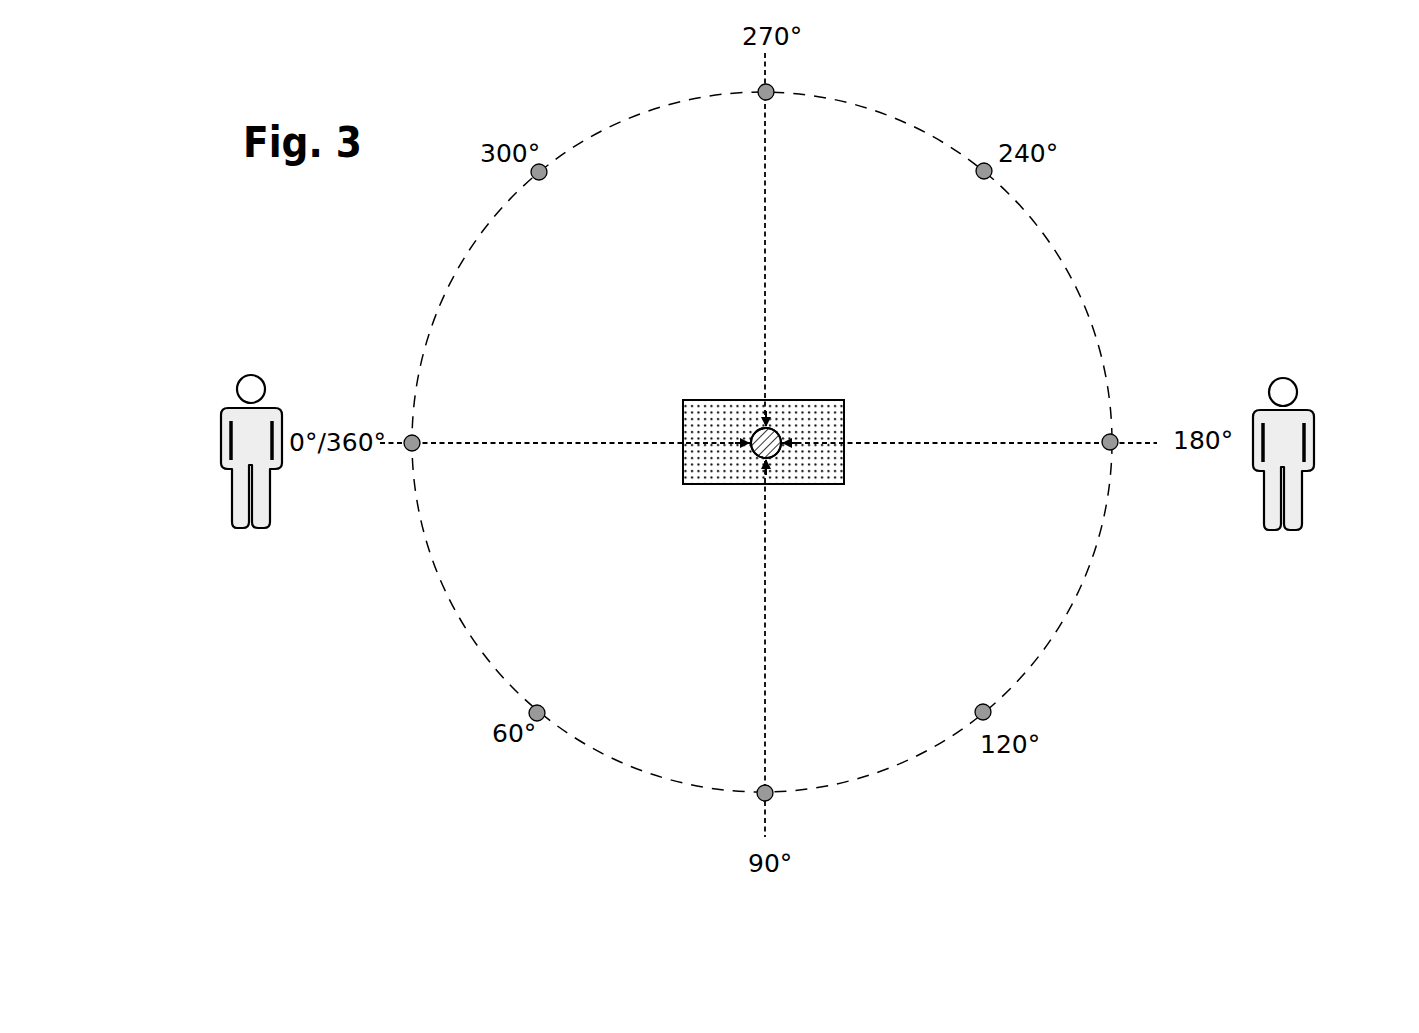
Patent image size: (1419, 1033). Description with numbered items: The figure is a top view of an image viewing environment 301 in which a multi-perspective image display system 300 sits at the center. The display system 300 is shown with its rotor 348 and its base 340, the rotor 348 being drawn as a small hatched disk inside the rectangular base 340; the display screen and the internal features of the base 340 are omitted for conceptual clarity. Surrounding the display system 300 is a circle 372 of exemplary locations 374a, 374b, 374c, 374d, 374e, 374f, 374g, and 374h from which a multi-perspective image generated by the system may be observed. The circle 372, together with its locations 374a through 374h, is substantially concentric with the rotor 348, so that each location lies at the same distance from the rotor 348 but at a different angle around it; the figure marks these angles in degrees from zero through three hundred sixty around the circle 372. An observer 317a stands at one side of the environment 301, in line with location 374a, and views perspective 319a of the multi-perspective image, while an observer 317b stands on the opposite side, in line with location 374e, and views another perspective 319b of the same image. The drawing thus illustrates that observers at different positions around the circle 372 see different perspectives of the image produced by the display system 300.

The multi-perspective image display system 300 is at (728, 375).
The image viewing environment 301 is at (1066, 724).
The observer 317a is at (219, 447).
The observer 317b is at (1315, 445).
The perspective 319a is at (512, 443).
The perspective 319b is at (1027, 443).
The base 340 is at (845, 478).
The rotor 348 is at (776, 431).
The circle 372 is at (875, 110).
The location 374a is at (414, 451).
The location 374b is at (544, 707).
The location 374c is at (772, 788).
The location 374d is at (978, 704).
The location 374e is at (1108, 450).
The location 374f is at (982, 179).
The location 374g is at (758, 94).
The location 374h is at (543, 180).